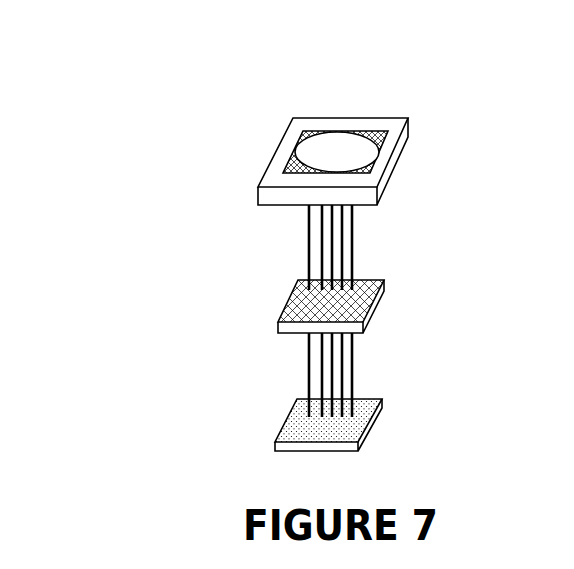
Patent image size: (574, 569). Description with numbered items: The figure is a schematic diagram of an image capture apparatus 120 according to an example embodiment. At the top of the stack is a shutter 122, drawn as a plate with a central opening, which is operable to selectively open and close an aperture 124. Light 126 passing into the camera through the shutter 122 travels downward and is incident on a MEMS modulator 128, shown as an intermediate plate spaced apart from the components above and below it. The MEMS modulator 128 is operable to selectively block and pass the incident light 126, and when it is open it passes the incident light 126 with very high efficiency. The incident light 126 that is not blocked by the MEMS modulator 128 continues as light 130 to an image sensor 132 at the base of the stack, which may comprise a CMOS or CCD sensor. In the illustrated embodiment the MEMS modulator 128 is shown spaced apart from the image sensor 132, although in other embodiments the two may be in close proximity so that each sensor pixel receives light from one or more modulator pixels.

The image capture apparatus 120 is at (158, 100).
The shutter 122 is at (276, 152).
The aperture 124 is at (357, 143).
The light 126 is at (357, 253).
The MEMS modulator 128 is at (288, 300).
The light 130 is at (355, 373).
The image sensor 132 is at (286, 420).